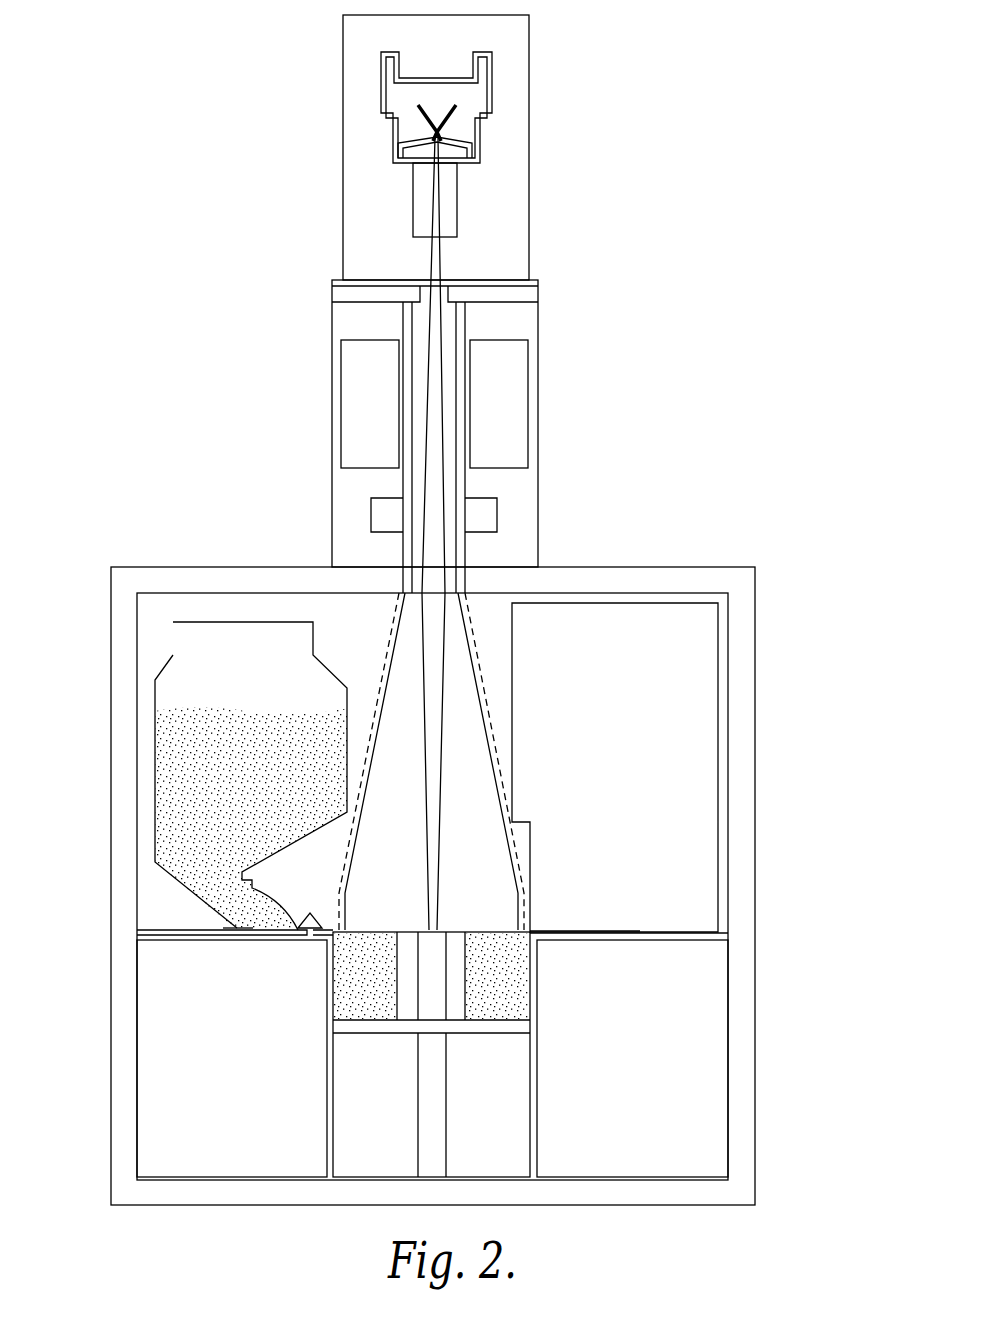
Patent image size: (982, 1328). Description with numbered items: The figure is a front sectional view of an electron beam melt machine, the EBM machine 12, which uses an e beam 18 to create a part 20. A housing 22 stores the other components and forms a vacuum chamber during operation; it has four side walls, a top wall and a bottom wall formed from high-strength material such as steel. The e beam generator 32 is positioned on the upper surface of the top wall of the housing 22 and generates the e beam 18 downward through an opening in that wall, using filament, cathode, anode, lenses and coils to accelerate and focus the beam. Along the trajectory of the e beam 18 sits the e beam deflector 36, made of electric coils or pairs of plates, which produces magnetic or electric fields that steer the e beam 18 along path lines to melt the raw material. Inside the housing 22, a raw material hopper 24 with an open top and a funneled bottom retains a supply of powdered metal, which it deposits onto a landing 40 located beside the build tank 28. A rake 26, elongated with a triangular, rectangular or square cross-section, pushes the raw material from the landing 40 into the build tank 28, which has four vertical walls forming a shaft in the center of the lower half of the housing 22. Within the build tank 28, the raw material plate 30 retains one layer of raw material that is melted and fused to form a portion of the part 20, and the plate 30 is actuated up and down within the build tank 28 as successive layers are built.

The EBM machine 12 is at (200, 198).
The e beam 18 is at (438, 405).
The part 20 is at (468, 978).
The housing 22 is at (760, 657).
The raw material hopper 24 is at (185, 748).
The rake 26 is at (303, 942).
The build tank 28 is at (333, 1002).
The raw material plate 30 is at (370, 1038).
The e beam generator 32 is at (337, 92).
The e beam deflector 36 is at (362, 508).
The landing 40 is at (222, 925).